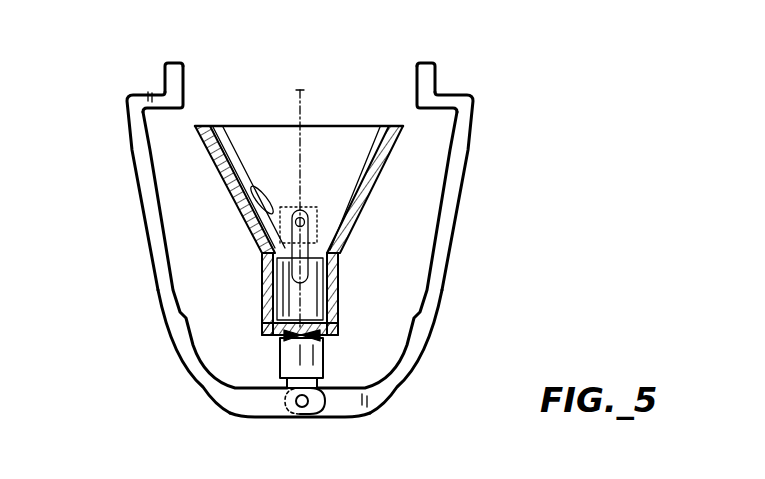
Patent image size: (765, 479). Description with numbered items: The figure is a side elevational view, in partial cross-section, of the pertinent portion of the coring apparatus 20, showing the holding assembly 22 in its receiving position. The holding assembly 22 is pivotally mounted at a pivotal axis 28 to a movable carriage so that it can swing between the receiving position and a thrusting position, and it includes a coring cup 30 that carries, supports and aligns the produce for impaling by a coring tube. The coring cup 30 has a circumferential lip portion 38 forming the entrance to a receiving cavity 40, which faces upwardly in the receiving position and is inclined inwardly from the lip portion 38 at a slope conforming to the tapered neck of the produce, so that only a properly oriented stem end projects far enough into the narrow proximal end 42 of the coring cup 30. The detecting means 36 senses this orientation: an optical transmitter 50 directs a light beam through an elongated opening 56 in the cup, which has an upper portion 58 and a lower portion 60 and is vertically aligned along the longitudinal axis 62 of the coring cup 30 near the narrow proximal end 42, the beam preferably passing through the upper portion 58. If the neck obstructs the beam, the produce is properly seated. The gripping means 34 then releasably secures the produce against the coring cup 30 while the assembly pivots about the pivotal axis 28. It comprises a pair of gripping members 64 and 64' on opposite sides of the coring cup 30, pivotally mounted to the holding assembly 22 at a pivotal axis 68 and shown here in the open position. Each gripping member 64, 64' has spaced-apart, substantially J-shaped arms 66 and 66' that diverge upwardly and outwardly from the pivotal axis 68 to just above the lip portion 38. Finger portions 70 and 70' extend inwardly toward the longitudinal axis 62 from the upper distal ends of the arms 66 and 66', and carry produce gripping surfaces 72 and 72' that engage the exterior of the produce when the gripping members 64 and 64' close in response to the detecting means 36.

The coring apparatus 20 is at (583, 64).
The holding assembly 22 is at (394, 251).
The pivotal axis 28 is at (280, 343).
The coring cup 30 is at (216, 192).
The gripping means 34 is at (176, 400).
The detecting means 36 is at (283, 184).
The circumferential lip portion 38 is at (402, 125).
The receiving cavity 40 is at (366, 160).
The narrow proximal end 42 is at (252, 214).
The optical transmitter 50 is at (313, 207).
The elongated opening 56 is at (308, 258).
The upper portion 58 is at (312, 219).
The lower portion 60 is at (306, 283).
The longitudinal axis 62 is at (301, 90).
The gripping member 64 is at (145, 351).
The gripping member 64' is at (450, 351).
The spaced-apart arm 66 is at (104, 191).
The spaced-apart arm 66' is at (504, 191).
The pivotal axis 68 is at (305, 410).
The finger portion 70 is at (149, 62).
The finger portion 70' is at (450, 64).
The produce gripping surface 72 is at (188, 73).
The produce gripping surface 72' is at (411, 75).